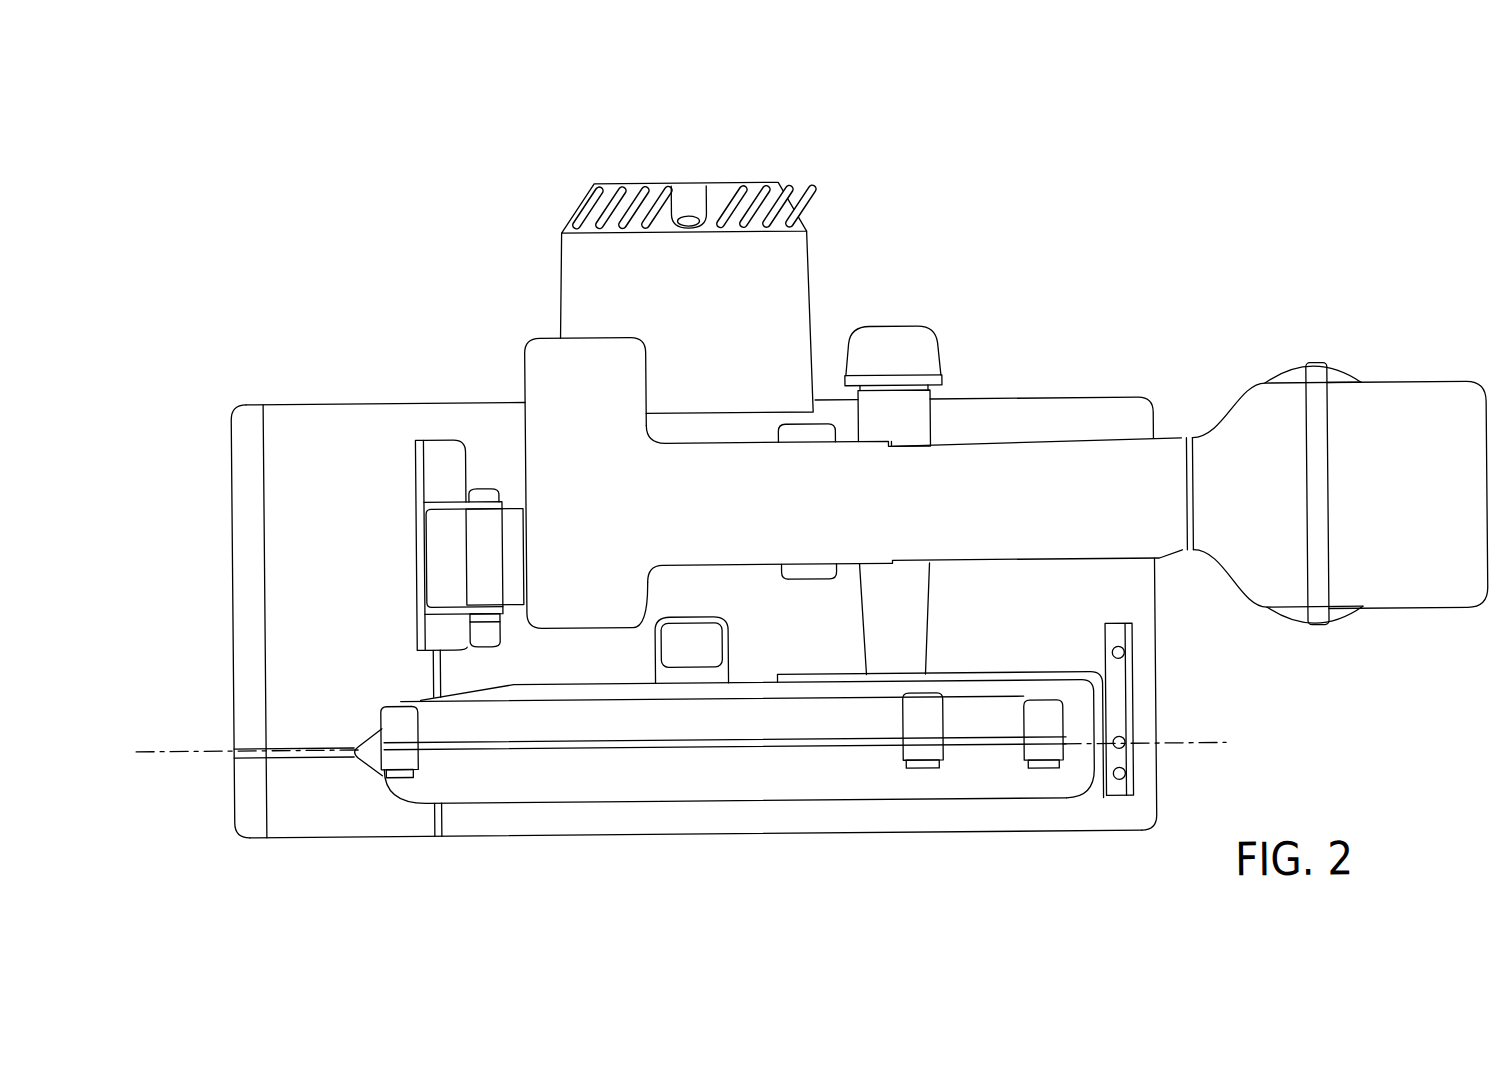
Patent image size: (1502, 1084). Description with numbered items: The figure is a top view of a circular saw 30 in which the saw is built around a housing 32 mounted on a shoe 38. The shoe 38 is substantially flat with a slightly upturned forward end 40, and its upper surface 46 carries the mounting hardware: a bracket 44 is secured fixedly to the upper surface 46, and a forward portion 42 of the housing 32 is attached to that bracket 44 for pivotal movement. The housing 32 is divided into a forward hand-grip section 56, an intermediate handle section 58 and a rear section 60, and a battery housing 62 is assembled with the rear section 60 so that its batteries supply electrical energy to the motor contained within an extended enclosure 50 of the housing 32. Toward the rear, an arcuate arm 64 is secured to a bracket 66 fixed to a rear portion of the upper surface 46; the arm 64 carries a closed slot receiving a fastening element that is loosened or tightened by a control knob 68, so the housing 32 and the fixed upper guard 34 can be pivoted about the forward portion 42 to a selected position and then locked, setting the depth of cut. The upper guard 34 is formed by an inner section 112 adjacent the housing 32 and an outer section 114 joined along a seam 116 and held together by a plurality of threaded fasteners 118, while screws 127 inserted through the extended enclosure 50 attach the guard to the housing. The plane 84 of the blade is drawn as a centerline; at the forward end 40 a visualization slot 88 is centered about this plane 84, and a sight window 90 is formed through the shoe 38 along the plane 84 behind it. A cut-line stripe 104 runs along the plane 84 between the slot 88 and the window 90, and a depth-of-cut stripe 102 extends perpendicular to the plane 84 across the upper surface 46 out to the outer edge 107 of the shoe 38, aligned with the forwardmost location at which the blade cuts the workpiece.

The circular saw 30 is at (1172, 252).
The housing 32 is at (1110, 432).
The fixed upper guard 34 is at (713, 806).
The shoe 38 is at (986, 838).
The forward end 40 is at (240, 578).
The forward portion 42 is at (495, 545).
The bracket 44 is at (412, 553).
The upper surface 46 is at (345, 418).
The extended enclosure 50 is at (720, 267).
The forward hand-grip section 56 is at (545, 355).
The intermediate handle section 58 is at (997, 455).
The rear section 60 is at (1259, 416).
The battery housing 62 is at (1398, 390).
The arcuate arm 64 is at (1018, 672).
The bracket 66 is at (1138, 716).
The control knob 68 is at (903, 337).
The plane 84 is at (1176, 748).
The visualization slot 88 is at (243, 757).
The sight window 90 is at (362, 766).
The depth-of-cut stripe 102 is at (433, 682).
The cut-line stripe 104 is at (290, 757).
The outer edge 107 is at (497, 836).
The inner section 112 is at (798, 731).
The outer section 114 is at (488, 765).
The seam 116 is at (607, 750).
The threaded fasteners 118 is at (398, 772).
The screws 127 is at (691, 216).